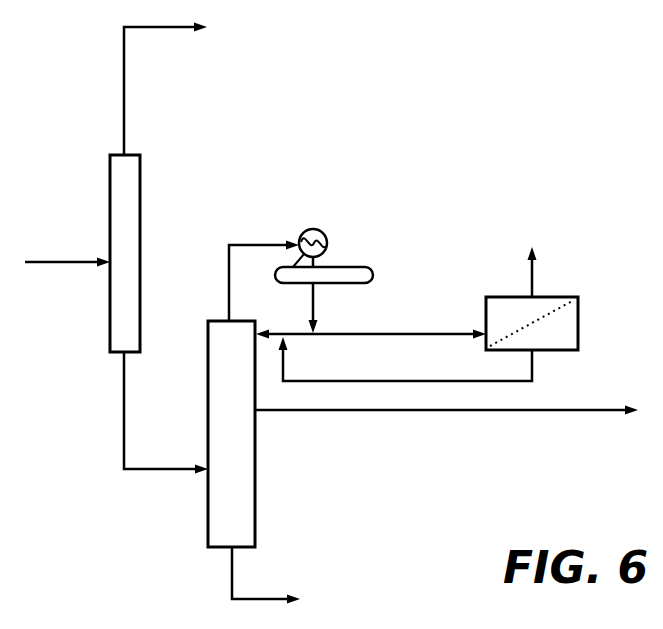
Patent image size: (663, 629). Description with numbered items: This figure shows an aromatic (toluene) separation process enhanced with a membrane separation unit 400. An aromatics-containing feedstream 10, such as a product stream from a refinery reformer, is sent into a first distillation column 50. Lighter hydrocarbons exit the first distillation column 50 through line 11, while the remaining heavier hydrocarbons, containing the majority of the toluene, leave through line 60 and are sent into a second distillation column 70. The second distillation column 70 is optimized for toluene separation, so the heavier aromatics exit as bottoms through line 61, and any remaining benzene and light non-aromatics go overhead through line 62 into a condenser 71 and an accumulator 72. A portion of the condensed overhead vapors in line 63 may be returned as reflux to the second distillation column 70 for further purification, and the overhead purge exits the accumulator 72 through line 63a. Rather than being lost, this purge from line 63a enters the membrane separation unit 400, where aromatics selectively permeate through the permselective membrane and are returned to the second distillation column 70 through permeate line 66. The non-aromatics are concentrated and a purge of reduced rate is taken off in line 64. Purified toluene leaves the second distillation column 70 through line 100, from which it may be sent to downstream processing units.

The aromatics-containing feedstream 10 is at (86, 260).
The line 11 is at (179, 86).
The first distillation column 50 is at (140, 178).
The line 60 is at (178, 477).
The line 61 is at (281, 580).
The line 62 is at (263, 243).
The line 63 is at (352, 337).
The line 63a is at (480, 332).
The line 64 is at (529, 259).
The permeate line 66 is at (508, 382).
The second distillation column 70 is at (247, 452).
The condenser 71 is at (325, 232).
The accumulator 72 is at (368, 270).
The line 100 is at (447, 412).
The membrane separation unit 400 is at (578, 330).